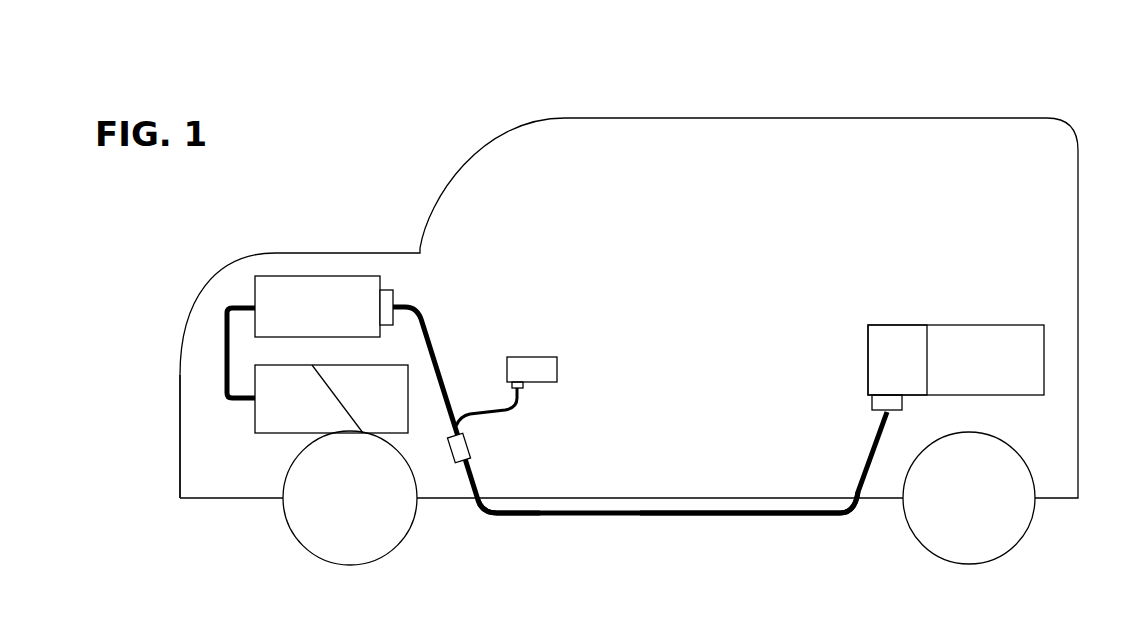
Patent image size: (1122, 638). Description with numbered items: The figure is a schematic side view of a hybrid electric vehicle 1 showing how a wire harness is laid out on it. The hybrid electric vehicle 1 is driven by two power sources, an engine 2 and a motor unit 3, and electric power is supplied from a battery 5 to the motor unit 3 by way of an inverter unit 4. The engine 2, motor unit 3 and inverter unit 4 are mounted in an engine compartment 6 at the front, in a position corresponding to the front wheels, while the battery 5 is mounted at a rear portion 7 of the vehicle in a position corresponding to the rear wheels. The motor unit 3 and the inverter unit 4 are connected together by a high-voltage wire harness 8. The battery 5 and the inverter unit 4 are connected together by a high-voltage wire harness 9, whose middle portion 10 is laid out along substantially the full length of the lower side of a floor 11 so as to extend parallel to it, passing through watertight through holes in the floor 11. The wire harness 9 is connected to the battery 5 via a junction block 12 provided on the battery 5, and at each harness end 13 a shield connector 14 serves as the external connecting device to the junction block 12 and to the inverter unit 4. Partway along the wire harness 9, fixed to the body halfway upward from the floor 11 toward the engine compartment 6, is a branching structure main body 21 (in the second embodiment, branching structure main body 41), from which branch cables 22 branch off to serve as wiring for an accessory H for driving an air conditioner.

The hybrid electric vehicle 1 is at (705, 106).
The engine 2 is at (388, 410).
The motor unit 3 is at (287, 415).
The inverter unit 4 is at (298, 297).
The battery 5 is at (985, 345).
The engine compartment 6 is at (202, 460).
The rear portion 7 is at (1050, 448).
The high-voltage wire harness 8 is at (223, 360).
The wire harness 9 is at (531, 520).
The middle portion 10 is at (687, 516).
The floor 11 is at (775, 504).
The junction block 12 is at (900, 345).
The harness end 13 is at (418, 313).
The shield connector 14 is at (396, 296).
The branching structure main body 21 is at (529, 455).
The branching structure main body 41 is at (477, 449).
The branch cables 22 is at (503, 412).
The accessory H is at (557, 368).